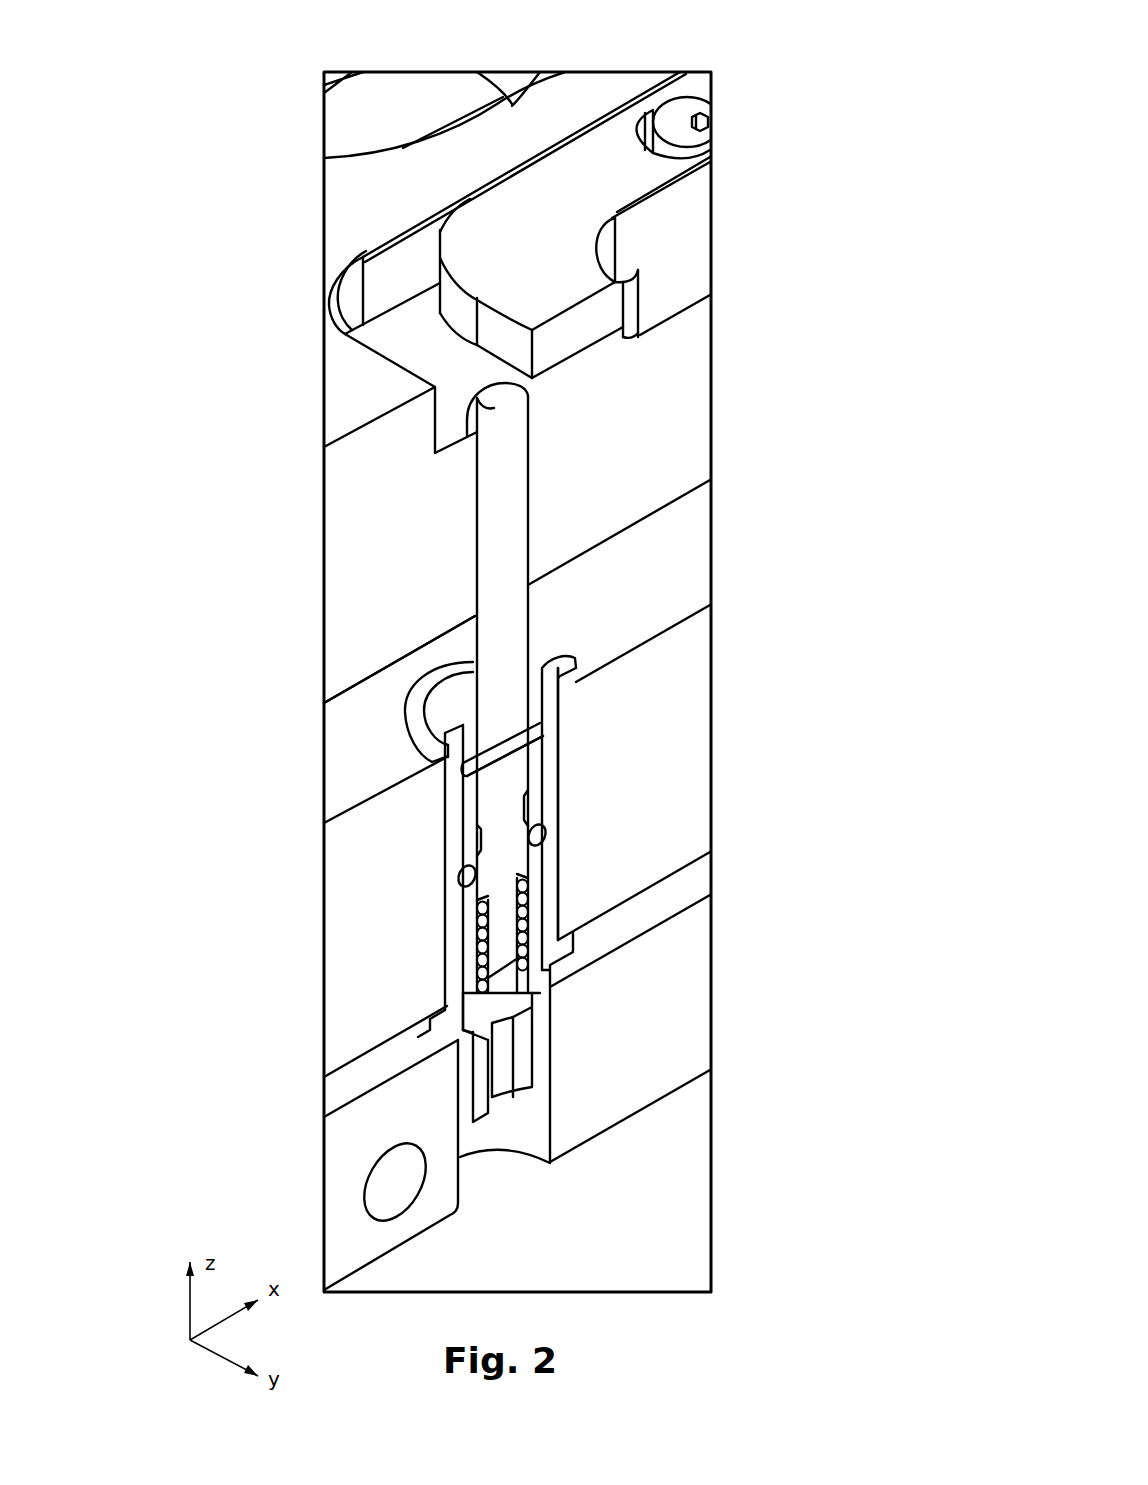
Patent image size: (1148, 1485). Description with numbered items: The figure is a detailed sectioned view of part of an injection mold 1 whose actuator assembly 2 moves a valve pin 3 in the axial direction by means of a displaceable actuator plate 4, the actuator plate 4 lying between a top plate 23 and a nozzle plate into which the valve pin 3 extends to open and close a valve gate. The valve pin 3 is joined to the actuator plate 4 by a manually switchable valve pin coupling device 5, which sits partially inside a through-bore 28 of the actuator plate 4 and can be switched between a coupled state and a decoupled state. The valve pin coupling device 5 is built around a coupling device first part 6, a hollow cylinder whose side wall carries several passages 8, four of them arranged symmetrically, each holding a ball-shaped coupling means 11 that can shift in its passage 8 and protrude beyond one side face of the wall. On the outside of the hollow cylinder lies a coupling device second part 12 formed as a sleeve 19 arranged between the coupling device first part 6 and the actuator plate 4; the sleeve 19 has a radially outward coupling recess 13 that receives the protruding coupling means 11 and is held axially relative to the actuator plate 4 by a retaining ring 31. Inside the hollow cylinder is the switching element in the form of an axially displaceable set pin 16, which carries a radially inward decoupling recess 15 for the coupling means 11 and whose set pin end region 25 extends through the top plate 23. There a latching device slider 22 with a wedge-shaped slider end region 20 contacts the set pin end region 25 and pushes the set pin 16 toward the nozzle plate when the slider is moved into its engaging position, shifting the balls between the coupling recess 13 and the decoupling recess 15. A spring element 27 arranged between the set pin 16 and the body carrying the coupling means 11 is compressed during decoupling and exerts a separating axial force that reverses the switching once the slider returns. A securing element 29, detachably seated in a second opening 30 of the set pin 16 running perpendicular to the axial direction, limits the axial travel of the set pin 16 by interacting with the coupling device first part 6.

The injection mold 1 is at (268, 64).
The actuator assembly 2 is at (388, 662).
The valve pin 3 is at (515, 1070).
The actuator plate 4 is at (373, 697).
The valve pin coupling device 5 is at (597, 723).
The coupling device first part 6 is at (463, 693).
The passage 8 is at (556, 905).
The coupling means 11 is at (485, 888).
The coupling device second part 12 is at (460, 703).
The coupling recess 13 is at (445, 868).
The decoupling recess 15 is at (470, 833).
The set pin 16 is at (502, 438).
The sleeve 19 is at (551, 960).
The wedge-shaped slider end region 20 is at (556, 372).
The latching device slider 22 is at (540, 200).
The top plate 23 is at (655, 233).
The set pin end region 25 is at (494, 386).
The spring element 27 is at (477, 915).
The through-bore 28 is at (567, 710).
The securing element 29 is at (484, 760).
The second opening 30 is at (523, 723).
The retaining ring 31 is at (555, 690).